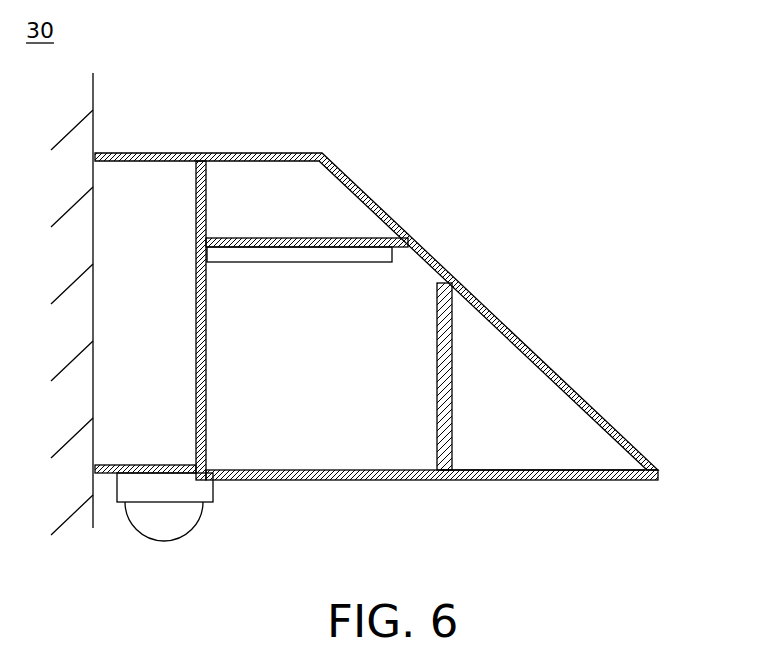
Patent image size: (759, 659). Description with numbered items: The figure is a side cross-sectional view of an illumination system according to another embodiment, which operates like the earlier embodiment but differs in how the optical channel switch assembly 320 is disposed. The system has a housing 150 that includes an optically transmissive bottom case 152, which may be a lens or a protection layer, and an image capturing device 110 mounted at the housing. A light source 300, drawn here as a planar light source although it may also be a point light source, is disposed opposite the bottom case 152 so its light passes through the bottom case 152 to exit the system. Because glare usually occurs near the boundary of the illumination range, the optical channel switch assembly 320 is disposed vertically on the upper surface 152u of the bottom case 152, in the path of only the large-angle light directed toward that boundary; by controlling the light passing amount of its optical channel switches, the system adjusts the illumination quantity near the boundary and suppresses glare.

The housing 150 is at (256, 153).
The optically transmissive bottom case 152 is at (533, 481).
The upper surface of the optically transmissive bottom case 152u is at (567, 468).
The light source 300 is at (372, 257).
The optical channel switch assembly 320 is at (453, 397).
The image capturing device 110 is at (158, 520).